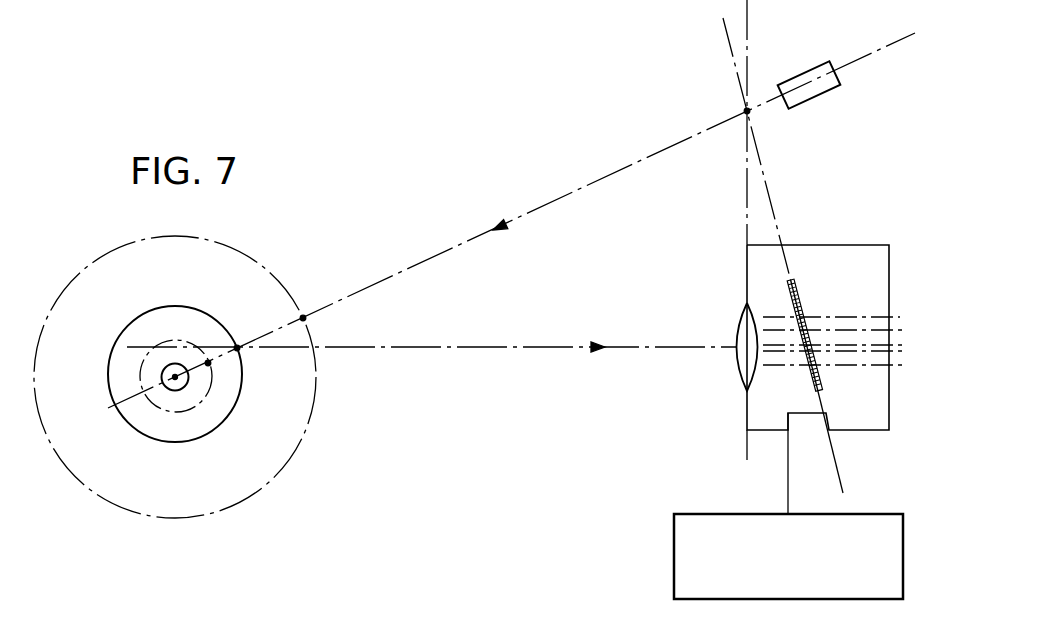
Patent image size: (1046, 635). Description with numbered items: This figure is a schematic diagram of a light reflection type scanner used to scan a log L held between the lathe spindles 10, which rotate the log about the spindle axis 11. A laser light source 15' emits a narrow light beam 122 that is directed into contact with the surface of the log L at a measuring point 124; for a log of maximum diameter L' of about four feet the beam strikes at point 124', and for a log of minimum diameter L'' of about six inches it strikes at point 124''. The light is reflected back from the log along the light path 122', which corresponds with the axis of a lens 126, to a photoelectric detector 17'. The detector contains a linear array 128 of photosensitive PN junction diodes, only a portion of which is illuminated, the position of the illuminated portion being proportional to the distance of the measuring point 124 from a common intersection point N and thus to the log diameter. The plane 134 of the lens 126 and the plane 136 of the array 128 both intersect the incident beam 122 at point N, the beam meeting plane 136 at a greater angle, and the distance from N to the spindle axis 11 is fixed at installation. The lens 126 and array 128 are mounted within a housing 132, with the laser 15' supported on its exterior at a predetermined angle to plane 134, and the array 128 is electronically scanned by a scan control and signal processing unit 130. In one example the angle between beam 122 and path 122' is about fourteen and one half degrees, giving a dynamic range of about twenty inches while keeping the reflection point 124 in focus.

The lathe spindle 10 is at (182, 366).
The spindle axis 11 is at (177, 372).
The log L is at (193, 374).
The maximum diameter log L' is at (206, 377).
The minimum diameter log L'' is at (132, 373).
The light beam 122 is at (511, 220).
The light path 122' is at (432, 317).
The measuring point 124 is at (238, 316).
The measuring point on maximum diameter log 124' is at (315, 284).
The measuring point on minimum diameter log 124'' is at (190, 316).
The common intersection point N is at (745, 110).
The laser light source 15' is at (809, 63).
The photoelectric detector 17' is at (810, 296).
The lens 126 is at (737, 318).
The linear array of photosensitive PN junction diodes 128 is at (797, 293).
The scan control and signal processing unit 130 is at (674, 548).
The housing 132 is at (890, 277).
The plane of the lens 134 is at (745, 190).
The plane of the photodiode array 136 is at (758, 152).